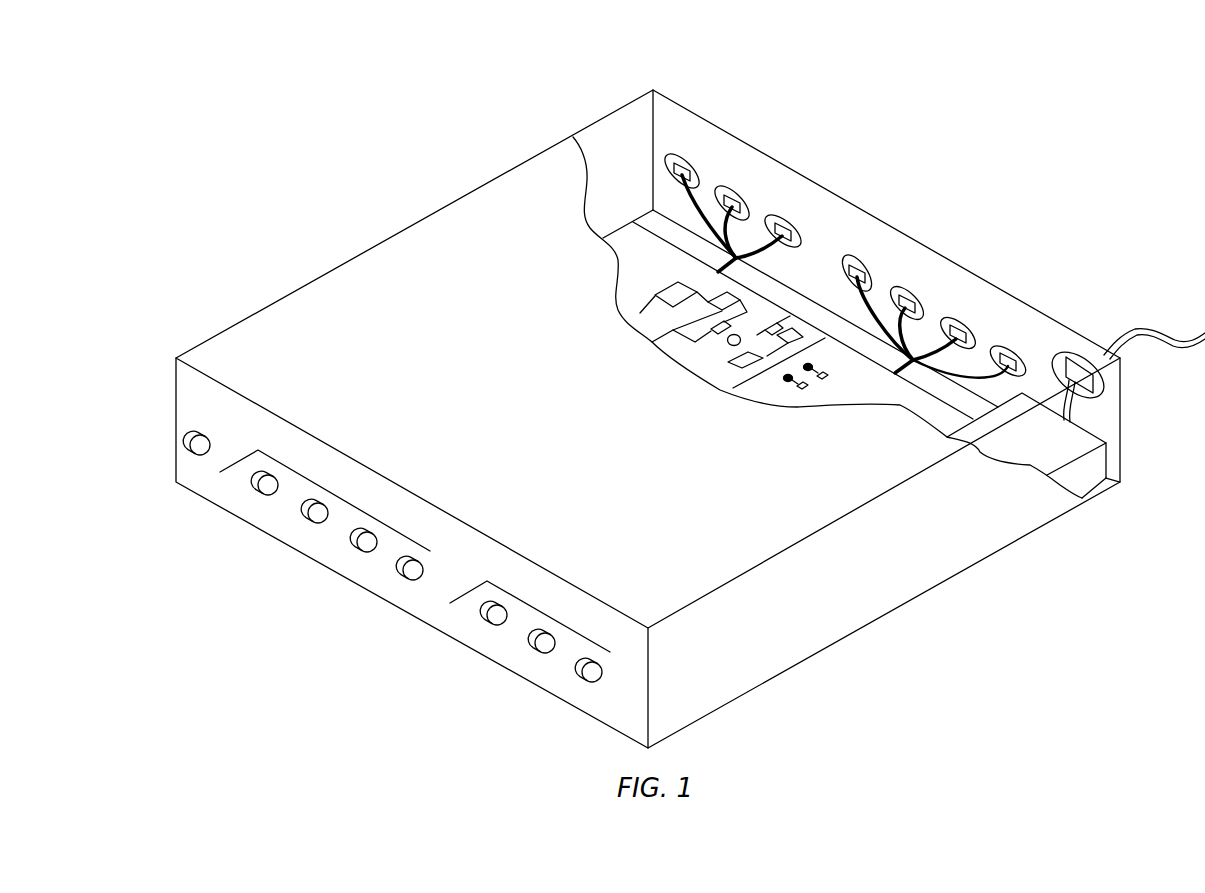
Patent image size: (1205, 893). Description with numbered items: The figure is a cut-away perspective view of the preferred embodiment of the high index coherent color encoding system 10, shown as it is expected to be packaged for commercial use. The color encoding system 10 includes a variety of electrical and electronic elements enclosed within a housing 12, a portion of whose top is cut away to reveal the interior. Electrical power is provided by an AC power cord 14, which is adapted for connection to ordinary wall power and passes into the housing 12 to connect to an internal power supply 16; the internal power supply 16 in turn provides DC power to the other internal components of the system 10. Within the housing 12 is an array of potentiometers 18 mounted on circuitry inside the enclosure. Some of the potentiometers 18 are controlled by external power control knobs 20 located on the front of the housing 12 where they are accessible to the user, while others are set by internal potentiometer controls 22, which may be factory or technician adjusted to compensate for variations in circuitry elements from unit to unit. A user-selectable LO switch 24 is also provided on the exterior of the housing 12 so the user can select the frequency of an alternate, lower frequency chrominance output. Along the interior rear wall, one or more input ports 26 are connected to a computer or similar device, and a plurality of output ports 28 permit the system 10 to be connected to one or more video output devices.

The high index coherent color encoding system 10 is at (545, 87).
The housing 12 is at (464, 374).
The AC power cord 14 is at (1140, 328).
The internal power supply 16 is at (1020, 442).
The potentiometers 18 is at (808, 388).
The external power control knobs 20 is at (408, 575).
The internal potentiometer controls 22 is at (809, 364).
The LO switch 24 is at (187, 440).
The input ports 26 is at (862, 268).
The output ports 28 is at (688, 165).